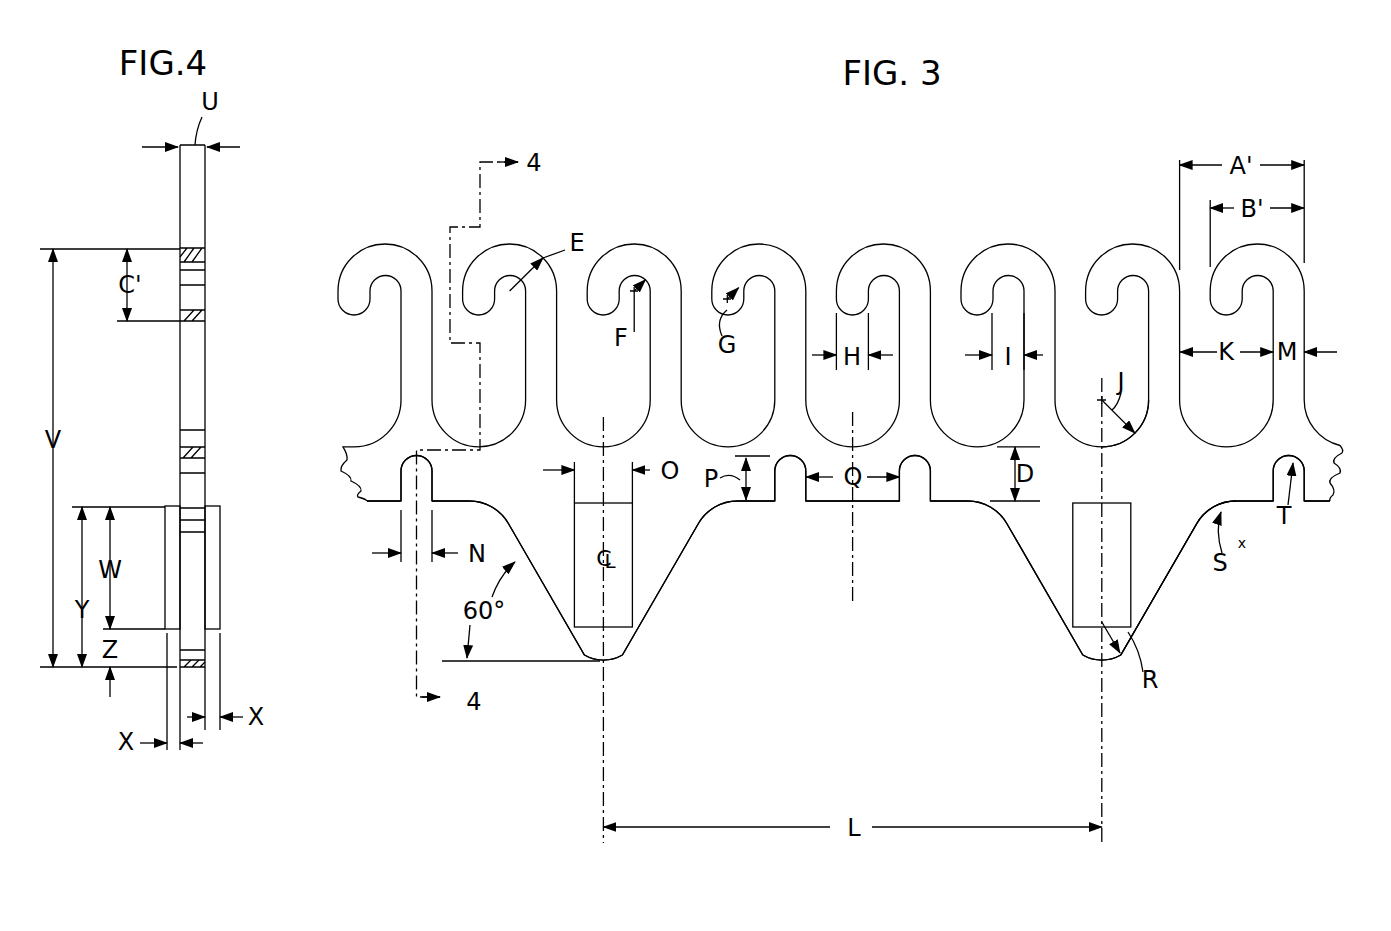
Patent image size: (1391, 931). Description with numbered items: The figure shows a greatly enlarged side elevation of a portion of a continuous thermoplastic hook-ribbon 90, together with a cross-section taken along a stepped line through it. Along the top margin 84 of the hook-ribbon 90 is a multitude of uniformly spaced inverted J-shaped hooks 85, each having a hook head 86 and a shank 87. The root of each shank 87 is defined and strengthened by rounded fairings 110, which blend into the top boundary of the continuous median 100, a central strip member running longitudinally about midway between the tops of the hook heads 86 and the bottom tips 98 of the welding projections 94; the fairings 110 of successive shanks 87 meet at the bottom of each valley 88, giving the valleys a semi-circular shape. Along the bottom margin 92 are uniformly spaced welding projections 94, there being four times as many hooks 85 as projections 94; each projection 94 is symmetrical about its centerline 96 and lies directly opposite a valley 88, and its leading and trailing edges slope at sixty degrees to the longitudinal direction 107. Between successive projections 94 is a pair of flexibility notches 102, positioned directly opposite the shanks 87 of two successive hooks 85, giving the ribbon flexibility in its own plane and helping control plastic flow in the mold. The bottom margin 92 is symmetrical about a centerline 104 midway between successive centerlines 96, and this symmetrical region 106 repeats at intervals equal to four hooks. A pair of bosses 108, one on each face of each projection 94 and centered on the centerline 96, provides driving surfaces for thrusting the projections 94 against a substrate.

In FIG. 3, the top margin 84 is at (1326, 255).
In FIG. 3, the hooks 85 is at (801, 264).
In FIG. 4, the hooks 85 is at (212, 298).
In FIG. 3, the hook heads 86 is at (758, 245).
In FIG. 4, the hook heads 86 is at (198, 262).
In FIG. 3, the shanks 87 is at (671, 340).
In FIG. 4, the shanks 87 is at (198, 372).
In FIG. 3, the valley 88 is at (594, 443).
In FIG. 3, the hook-ribbon 90 is at (1128, 154).
In FIG. 4, the hook-ribbon 90 is at (270, 174).
In FIG. 3, the bottom margin 92 is at (1265, 620).
In FIG. 3, the welding projections 94 is at (661, 617).
In FIG. 4, the welding projections 94 is at (208, 641).
In FIG. 3, the centerline 96 is at (606, 706).
In FIG. 3, the bottom tips 98 is at (600, 665).
In FIG. 4, the bottom tips 98 is at (194, 668).
In FIG. 3, the median 100 is at (345, 489).
In FIG. 3, the flexibility notches 102 is at (434, 480).
In FIG. 3, the centerline 104 is at (855, 605).
In FIG. 3, the symmetrical region 106 is at (857, 731).
In FIG. 3, the longitudinal direction 107 is at (492, 660).
In FIG. 3, the bosses 108 is at (633, 524).
In FIG. 4, the bosses 108 is at (172, 533).
In FIG. 3, the fairings 110 is at (1186, 430).